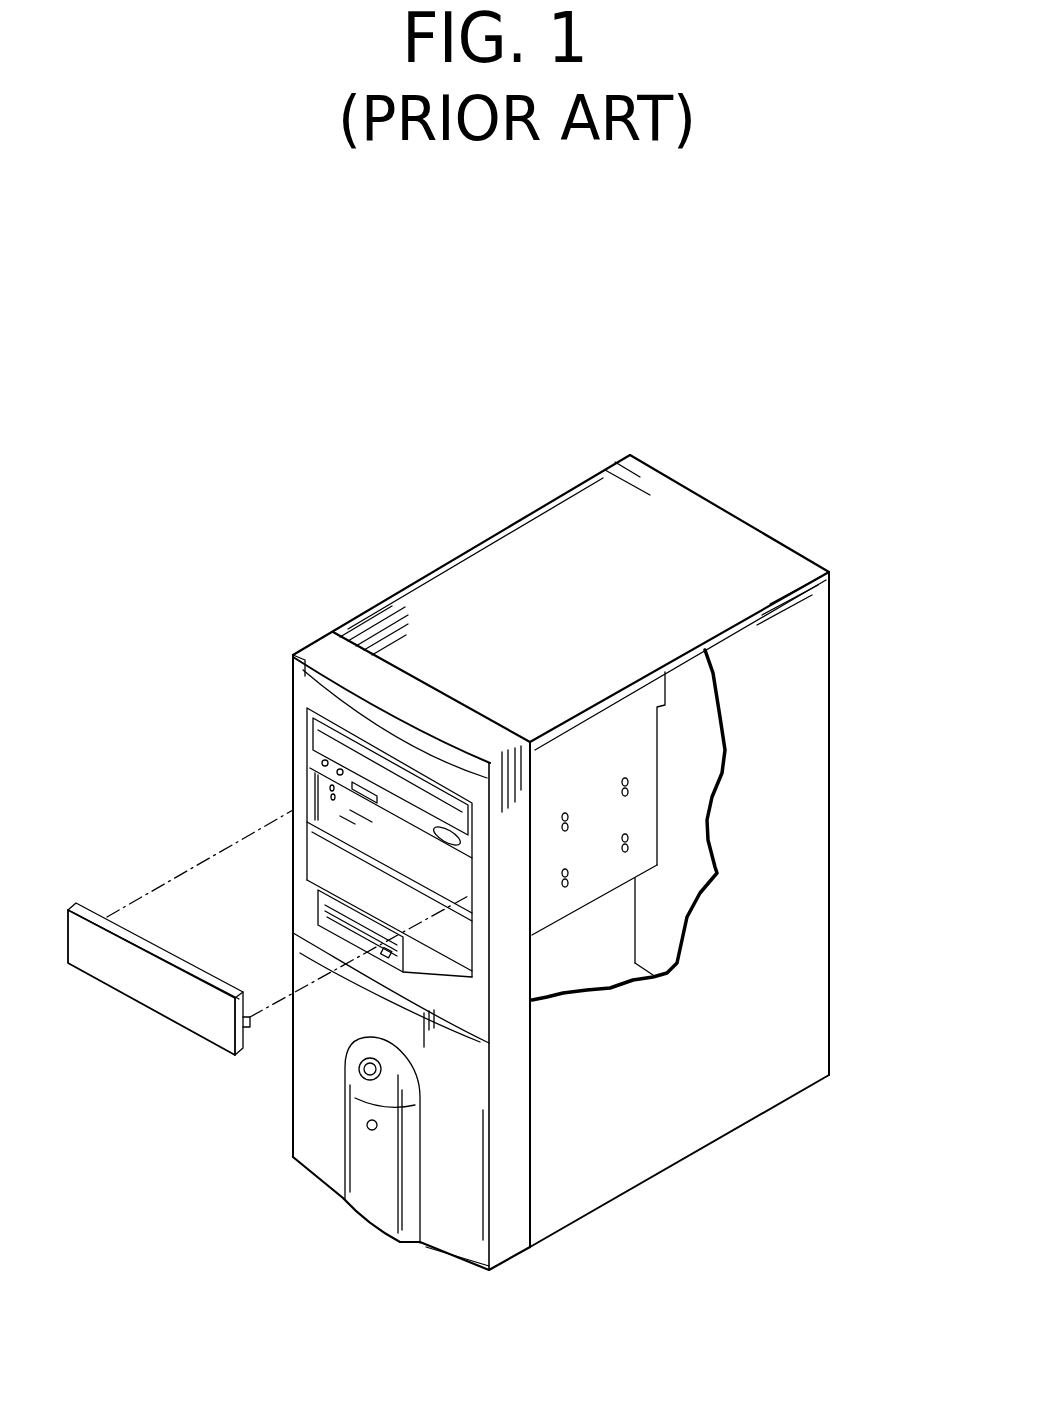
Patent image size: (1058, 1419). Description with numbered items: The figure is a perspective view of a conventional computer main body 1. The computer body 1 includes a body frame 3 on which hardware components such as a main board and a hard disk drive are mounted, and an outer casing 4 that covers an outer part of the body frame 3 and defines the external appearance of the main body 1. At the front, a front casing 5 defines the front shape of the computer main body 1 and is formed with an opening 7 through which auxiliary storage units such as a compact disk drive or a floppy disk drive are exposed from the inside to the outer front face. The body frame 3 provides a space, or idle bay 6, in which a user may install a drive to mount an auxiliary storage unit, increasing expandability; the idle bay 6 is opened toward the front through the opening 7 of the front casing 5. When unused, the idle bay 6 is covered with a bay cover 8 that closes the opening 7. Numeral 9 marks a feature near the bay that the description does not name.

The computer body 1 is at (781, 420).
The body frame 3 is at (640, 802).
The outer casing 4 is at (515, 553).
The front casing 5 is at (503, 1230).
The idle bay 6 is at (380, 785).
The opening 7 is at (362, 851).
The bay cover 8 is at (126, 978).
The fixing holes 9 is at (628, 850).